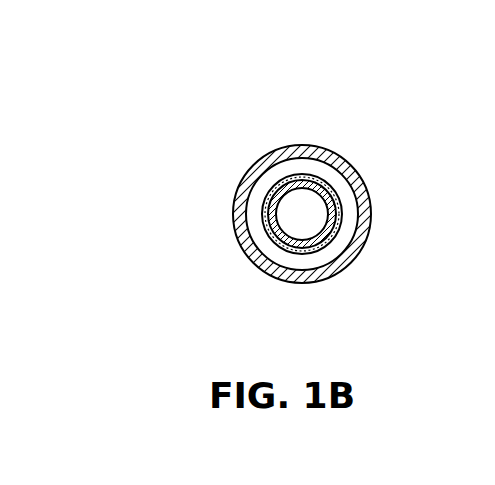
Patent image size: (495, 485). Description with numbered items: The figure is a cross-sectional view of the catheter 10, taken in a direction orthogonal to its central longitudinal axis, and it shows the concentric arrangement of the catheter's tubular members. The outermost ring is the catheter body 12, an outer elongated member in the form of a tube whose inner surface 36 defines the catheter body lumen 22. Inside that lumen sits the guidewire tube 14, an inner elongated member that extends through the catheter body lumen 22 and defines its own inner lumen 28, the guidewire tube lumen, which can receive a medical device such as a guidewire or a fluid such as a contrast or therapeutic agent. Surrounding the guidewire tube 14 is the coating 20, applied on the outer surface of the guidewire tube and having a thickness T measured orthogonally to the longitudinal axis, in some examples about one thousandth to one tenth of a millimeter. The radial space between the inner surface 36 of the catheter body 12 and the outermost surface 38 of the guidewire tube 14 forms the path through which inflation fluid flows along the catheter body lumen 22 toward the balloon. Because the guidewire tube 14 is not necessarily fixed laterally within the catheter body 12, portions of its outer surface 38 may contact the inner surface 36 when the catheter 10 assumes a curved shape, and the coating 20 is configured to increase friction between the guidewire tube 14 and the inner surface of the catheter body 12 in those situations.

The catheter 10 is at (382, 95).
The catheter body 12 is at (358, 220).
The guidewire tube 14 is at (325, 190).
The coating 20 is at (287, 253).
The inner lumen 22 is at (257, 194).
The inner lumen 28 is at (307, 223).
The inner surface 36 is at (293, 150).
The outermost surface 38 is at (265, 232).
The thickness T is at (300, 211).